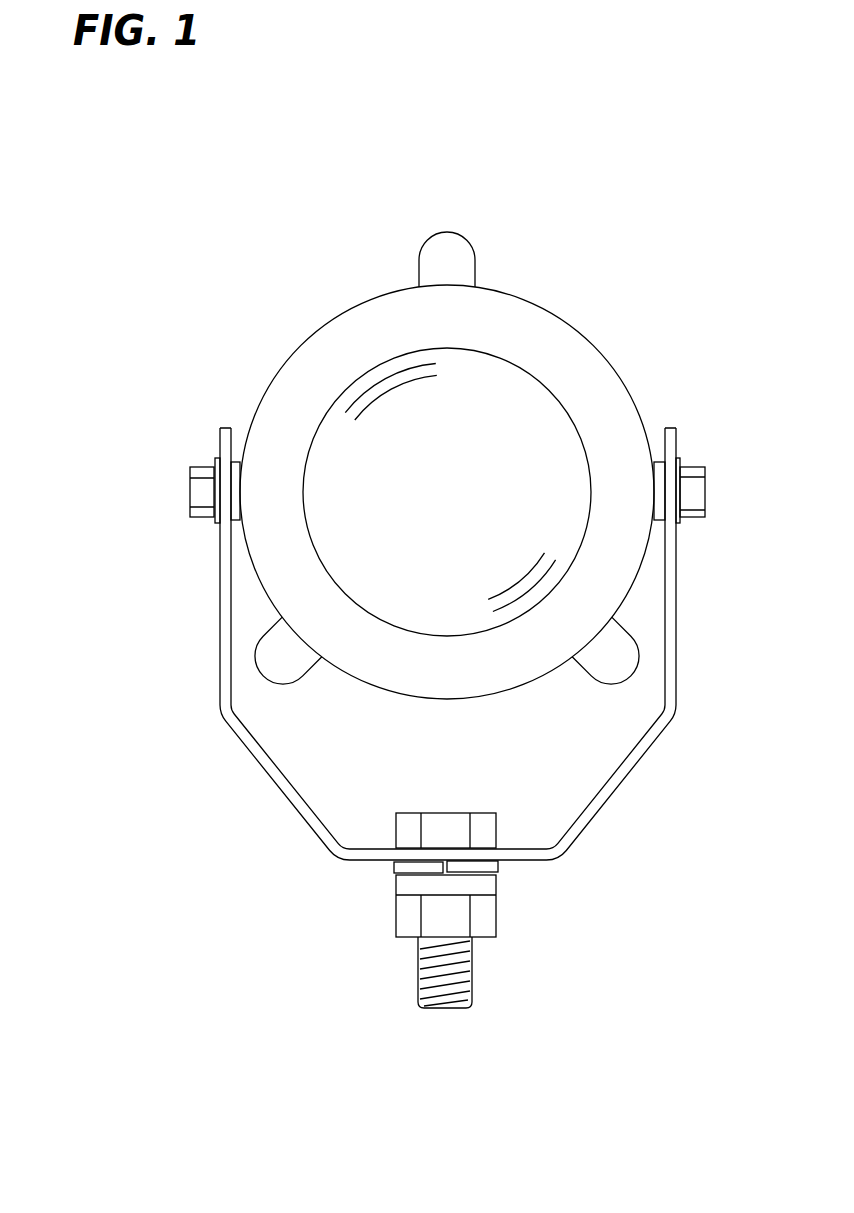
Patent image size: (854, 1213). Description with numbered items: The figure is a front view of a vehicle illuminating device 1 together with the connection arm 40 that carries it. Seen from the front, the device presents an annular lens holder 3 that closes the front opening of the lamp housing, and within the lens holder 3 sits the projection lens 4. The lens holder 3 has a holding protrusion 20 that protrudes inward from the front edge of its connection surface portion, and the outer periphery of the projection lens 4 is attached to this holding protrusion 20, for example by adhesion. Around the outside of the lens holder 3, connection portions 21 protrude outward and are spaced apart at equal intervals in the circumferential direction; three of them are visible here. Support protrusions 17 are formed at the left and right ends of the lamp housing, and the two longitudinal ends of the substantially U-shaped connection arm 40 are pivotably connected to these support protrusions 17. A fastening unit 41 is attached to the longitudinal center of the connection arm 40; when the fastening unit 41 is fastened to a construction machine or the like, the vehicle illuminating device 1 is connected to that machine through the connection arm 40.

The vehicle illuminating device 1 is at (540, 303).
The lens holder 3 is at (568, 343).
The projection lens 4 is at (543, 425).
The support protrusions 17 is at (240, 462).
The holding protrusion 20 is at (305, 368).
The connection portions 21 is at (456, 250).
The connection arm 40 is at (620, 780).
The fastening unit 41 is at (488, 885).